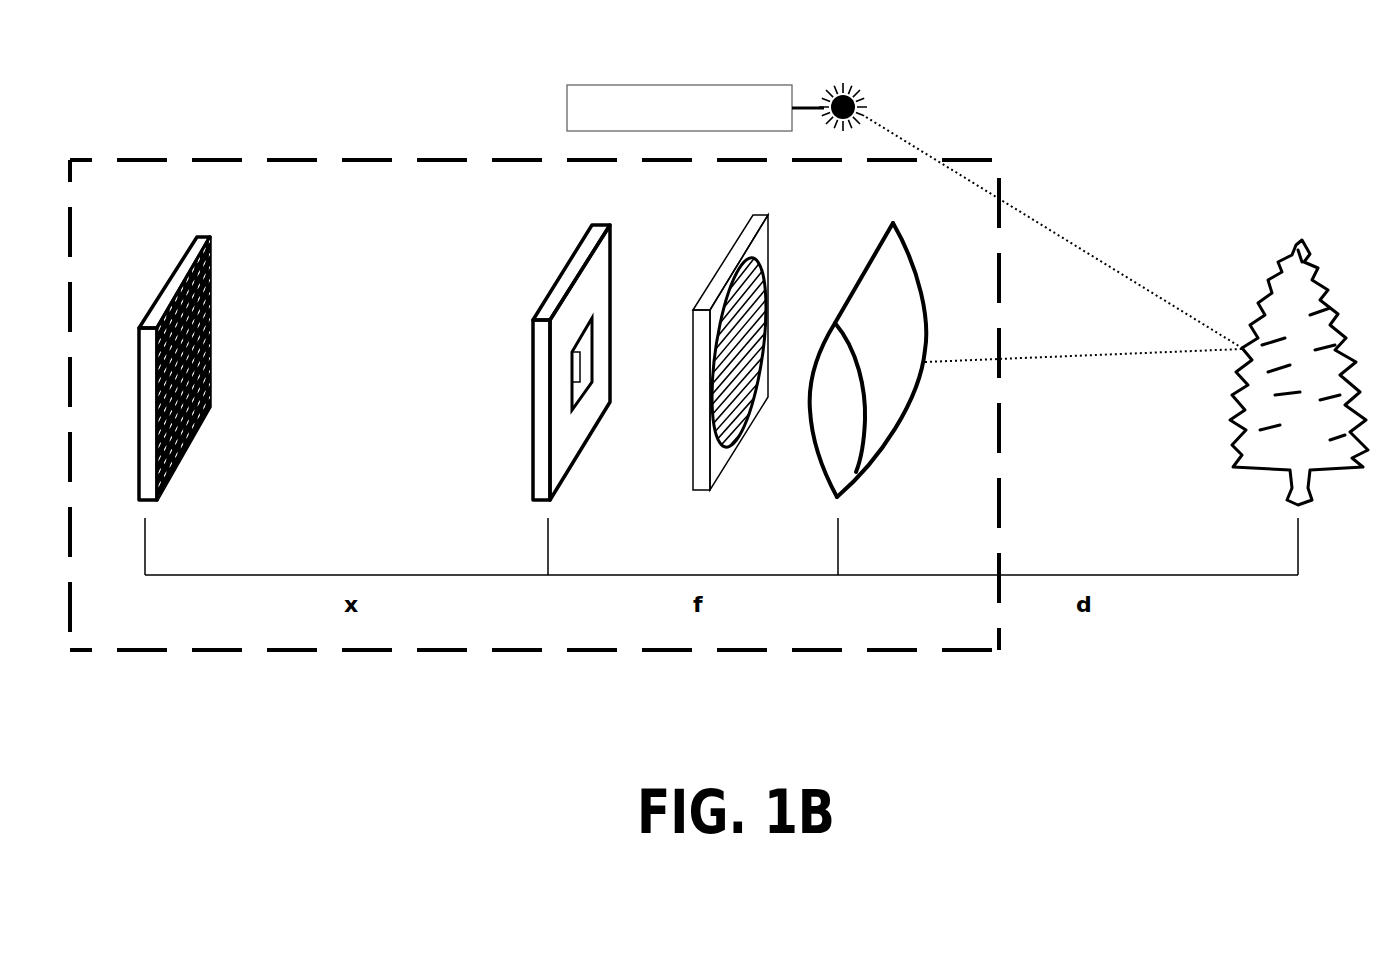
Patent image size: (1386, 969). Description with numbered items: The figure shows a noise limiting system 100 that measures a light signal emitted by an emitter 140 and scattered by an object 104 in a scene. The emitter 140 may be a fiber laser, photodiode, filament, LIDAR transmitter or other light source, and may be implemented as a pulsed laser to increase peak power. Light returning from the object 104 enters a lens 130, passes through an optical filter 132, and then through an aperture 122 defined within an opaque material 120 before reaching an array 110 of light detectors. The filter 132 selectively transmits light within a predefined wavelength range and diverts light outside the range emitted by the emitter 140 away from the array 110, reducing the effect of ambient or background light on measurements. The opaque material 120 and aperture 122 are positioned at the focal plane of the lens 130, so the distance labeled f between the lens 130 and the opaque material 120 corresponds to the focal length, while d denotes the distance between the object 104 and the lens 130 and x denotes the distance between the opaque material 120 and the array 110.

The noise limiting system 100 is at (305, 150).
The object 104 is at (1300, 286).
The array of light detectors 110 is at (195, 245).
The opaque material 120 is at (595, 228).
The aperture 122 is at (586, 355).
The lens 130 is at (892, 242).
The filter 132 is at (704, 488).
The emitter 140 is at (606, 102).